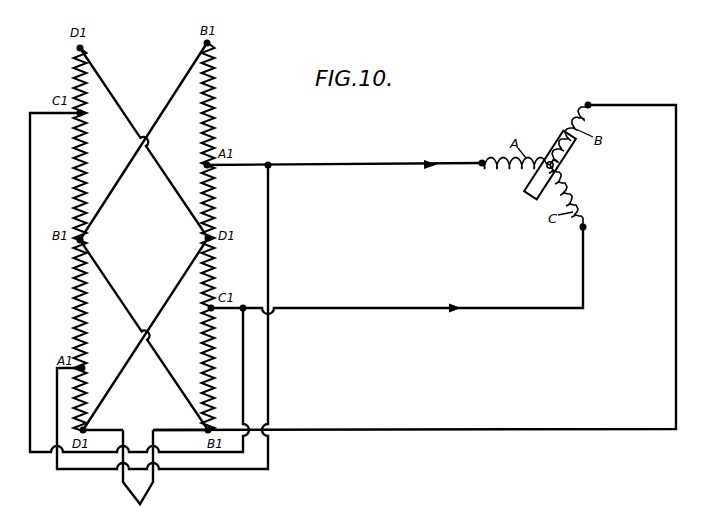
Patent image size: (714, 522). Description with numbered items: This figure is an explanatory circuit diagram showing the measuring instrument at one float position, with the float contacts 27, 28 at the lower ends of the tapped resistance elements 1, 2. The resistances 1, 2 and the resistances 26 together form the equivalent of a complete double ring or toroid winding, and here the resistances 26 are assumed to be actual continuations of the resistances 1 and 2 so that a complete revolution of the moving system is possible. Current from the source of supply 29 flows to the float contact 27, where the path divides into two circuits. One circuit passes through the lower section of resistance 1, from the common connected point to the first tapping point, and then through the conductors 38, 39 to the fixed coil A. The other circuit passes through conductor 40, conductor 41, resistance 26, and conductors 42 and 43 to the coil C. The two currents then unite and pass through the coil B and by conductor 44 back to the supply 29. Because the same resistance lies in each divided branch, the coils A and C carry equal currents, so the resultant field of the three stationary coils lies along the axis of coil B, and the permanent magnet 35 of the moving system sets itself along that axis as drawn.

The resistance element 1 is at (74, 155).
The resistance element 2 is at (218, 203).
The resistance 26 is at (74, 74).
The float contact 27 is at (95, 429).
The float contact 28 is at (196, 429).
The source of supply 29 is at (139, 476).
The permanent magnet 35 is at (529, 189).
The conductor 38 is at (270, 362).
The conductor 39 is at (363, 166).
The conductor 40 is at (176, 291).
The conductor 41 is at (122, 108).
The conductor 42 is at (33, 318).
The conductor 43 is at (365, 309).
The conductor 44 is at (482, 429).